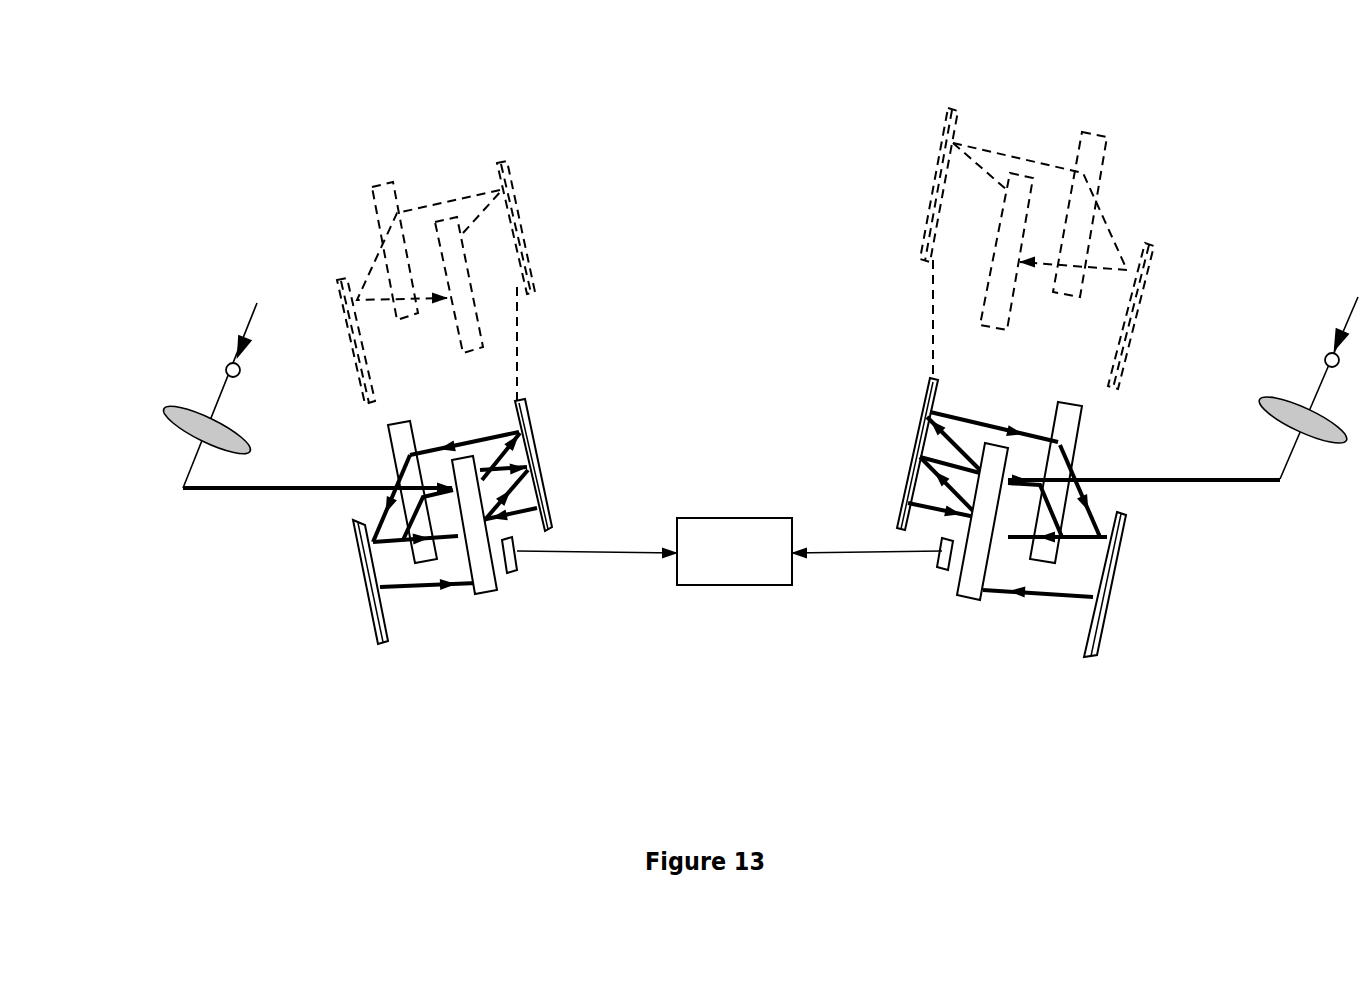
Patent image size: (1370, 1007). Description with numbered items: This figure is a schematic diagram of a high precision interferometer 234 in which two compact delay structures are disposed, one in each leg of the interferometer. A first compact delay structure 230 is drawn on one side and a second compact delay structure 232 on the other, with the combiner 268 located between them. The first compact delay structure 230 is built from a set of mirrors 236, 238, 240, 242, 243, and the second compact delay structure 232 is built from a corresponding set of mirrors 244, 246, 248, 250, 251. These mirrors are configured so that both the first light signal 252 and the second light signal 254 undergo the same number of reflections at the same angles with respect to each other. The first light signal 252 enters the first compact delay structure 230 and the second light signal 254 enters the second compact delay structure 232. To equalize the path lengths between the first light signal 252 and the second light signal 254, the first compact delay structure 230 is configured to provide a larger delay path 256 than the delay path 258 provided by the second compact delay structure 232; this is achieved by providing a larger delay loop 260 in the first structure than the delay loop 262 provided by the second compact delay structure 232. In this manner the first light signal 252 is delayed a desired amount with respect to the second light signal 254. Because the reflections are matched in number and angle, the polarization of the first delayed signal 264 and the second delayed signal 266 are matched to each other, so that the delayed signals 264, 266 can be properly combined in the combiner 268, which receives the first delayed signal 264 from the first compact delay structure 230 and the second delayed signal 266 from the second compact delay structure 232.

The first compact delay structure 230 is at (1130, 655).
The second compact delay structure 232 is at (345, 652).
The high precision interferometer 234 is at (327, 59).
The mirror 236 is at (982, 603).
The mirror 238 is at (900, 513).
The mirror 240 is at (1085, 440).
The mirror 242 is at (1118, 577).
The mirror 243 is at (938, 575).
The mirror 244 is at (480, 593).
The mirror 246 is at (550, 518).
The mirror 248 is at (390, 440).
The mirror 250 is at (360, 570).
The mirror 251 is at (515, 575).
The first light signal 252 is at (1352, 317).
The second light signal 254 is at (257, 325).
The delay path 256 is at (985, 413).
The delay path 258 is at (517, 432).
The delay loop 260 is at (1018, 157).
The delay loop 262 is at (463, 197).
The first delayed signal 264 is at (802, 537).
The second delayed signal 266 is at (665, 537).
The combiner 268 is at (734, 551).